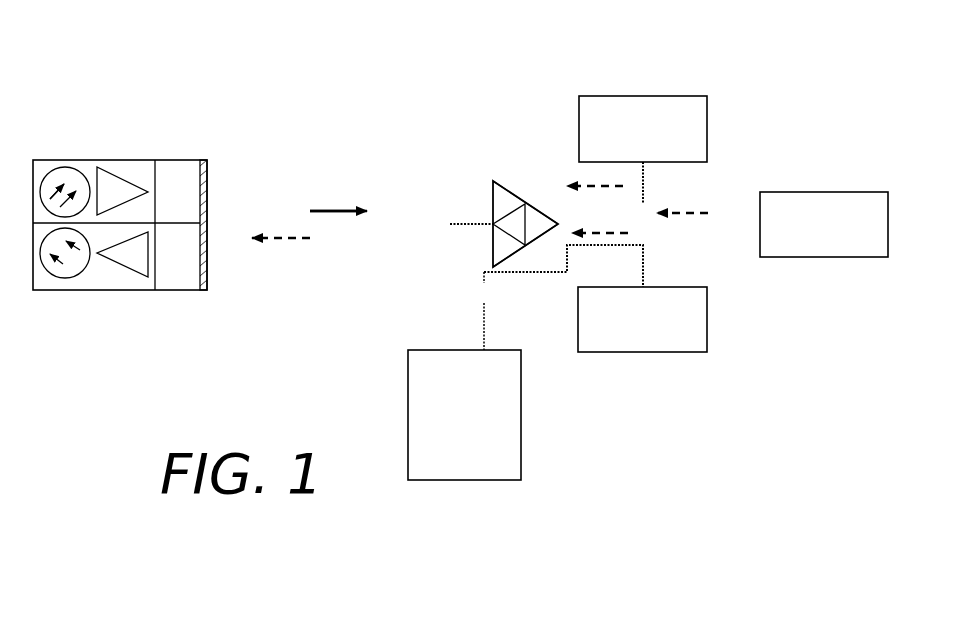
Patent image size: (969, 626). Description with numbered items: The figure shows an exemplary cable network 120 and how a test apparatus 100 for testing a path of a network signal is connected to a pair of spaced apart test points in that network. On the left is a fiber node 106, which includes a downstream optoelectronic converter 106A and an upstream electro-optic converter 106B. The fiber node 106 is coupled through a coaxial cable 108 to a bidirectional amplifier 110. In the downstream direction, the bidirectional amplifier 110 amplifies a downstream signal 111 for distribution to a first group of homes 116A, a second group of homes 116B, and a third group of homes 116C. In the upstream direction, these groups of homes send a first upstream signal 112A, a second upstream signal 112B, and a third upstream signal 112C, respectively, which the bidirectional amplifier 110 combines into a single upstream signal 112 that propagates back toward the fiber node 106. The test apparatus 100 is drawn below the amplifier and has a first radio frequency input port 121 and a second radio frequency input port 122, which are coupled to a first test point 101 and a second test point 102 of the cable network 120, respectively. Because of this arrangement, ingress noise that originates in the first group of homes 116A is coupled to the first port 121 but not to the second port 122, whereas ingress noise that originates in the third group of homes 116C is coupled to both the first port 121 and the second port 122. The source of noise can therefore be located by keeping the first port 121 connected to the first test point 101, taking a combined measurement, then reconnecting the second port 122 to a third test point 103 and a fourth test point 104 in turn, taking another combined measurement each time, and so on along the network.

The test apparatus 100 is at (467, 480).
The first test point 101 is at (444, 212).
The second test point 102 is at (568, 251).
The third test point 103 is at (540, 185).
The fourth test point 104 is at (534, 190).
The fiber node 106 is at (124, 223).
The downstream optoelectronic converter 106A is at (167, 159).
The upstream electro-optic converter 106B is at (187, 290).
The coaxial cable 108 is at (355, 222).
The bidirectional amplifier 110 is at (478, 151).
The downstream signal 111 is at (327, 210).
The upstream signal 112 is at (293, 242).
The first upstream signal 112A is at (558, 210).
The second upstream signal 112B is at (708, 213).
The third upstream signal 112C is at (628, 233).
The first group of homes 116A is at (637, 96).
The second group of homes 116B is at (855, 192).
The third group of homes 116C is at (678, 352).
The cable network 120 is at (250, 85).
The first RF input port 121 is at (432, 343).
The second RF input port 122 is at (494, 342).